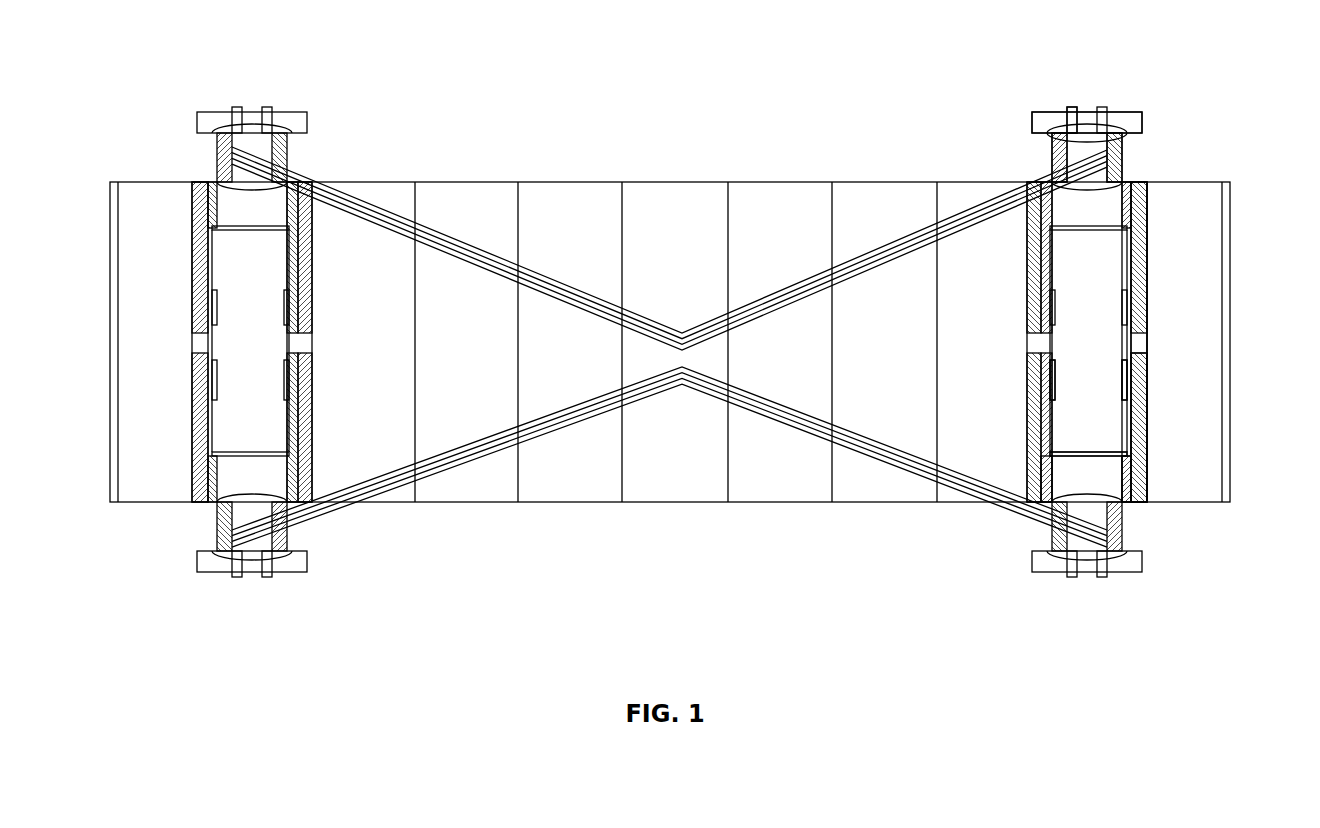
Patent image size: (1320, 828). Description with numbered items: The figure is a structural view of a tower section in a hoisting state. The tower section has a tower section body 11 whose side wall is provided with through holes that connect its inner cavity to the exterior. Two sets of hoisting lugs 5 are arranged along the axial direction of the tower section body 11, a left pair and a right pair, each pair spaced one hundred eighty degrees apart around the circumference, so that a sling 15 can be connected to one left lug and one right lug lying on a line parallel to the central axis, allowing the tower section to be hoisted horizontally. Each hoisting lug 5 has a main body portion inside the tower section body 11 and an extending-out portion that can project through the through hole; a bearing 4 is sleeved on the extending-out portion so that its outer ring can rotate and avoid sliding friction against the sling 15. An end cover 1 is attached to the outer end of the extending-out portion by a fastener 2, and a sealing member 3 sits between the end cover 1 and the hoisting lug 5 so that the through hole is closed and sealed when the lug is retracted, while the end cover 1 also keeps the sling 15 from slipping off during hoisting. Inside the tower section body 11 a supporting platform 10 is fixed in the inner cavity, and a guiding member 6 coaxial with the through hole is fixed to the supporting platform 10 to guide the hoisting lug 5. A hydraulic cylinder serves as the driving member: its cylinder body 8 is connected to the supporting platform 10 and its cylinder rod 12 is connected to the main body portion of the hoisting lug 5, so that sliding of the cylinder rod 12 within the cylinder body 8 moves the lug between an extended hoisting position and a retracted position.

The end cover 1 is at (1045, 118).
The fastener 2 is at (1068, 112).
The sealing member 3 is at (1088, 127).
The bearing 4 is at (1052, 152).
The hoisting lug 5 is at (1088, 477).
The guiding member 6 is at (1140, 185).
The cylinder body 8 is at (1147, 385).
The supporting platform 10 is at (1148, 257).
The tower section body 11 is at (1183, 363).
The cylinder rod 12 is at (1147, 435).
The sling 15 is at (703, 340).